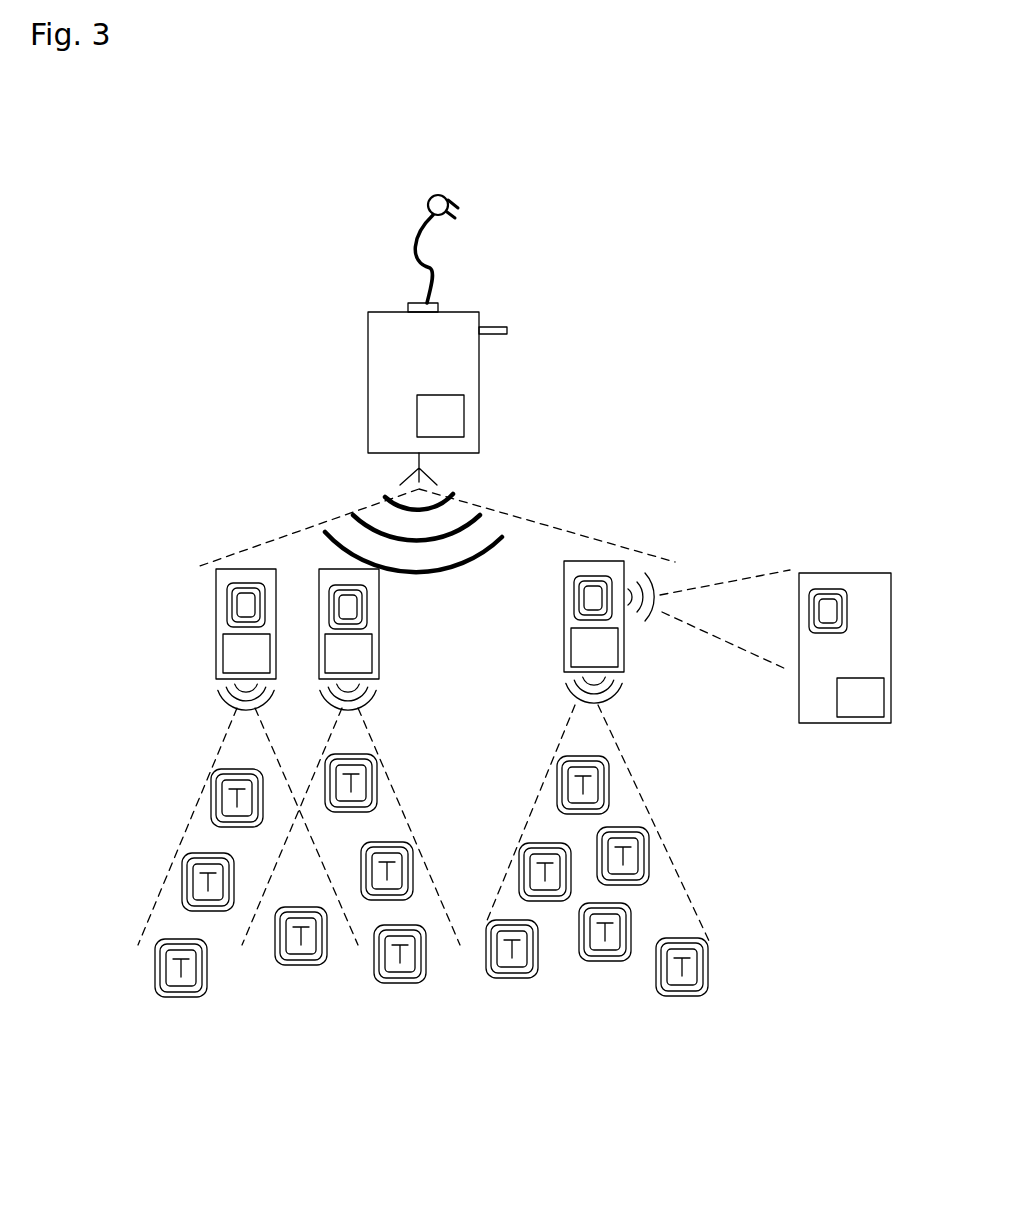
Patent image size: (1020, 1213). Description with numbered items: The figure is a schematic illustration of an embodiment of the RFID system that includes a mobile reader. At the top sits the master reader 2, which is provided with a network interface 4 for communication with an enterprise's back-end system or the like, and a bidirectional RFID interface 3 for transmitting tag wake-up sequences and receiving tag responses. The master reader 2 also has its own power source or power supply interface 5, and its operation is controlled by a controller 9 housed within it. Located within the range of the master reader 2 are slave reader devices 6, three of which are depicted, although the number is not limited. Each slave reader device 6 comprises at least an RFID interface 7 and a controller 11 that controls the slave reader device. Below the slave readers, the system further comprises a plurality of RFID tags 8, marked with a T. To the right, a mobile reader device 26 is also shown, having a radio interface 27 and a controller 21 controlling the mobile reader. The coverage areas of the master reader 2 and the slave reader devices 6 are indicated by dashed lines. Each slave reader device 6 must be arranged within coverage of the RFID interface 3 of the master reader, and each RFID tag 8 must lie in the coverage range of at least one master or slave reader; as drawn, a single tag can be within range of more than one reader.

The master reader 2 is at (380, 334).
The RFID interface 3 is at (398, 470).
The network interface 4 is at (500, 313).
The power supply interface 5 is at (415, 197).
The slave reader device 6 is at (392, 608).
The RFID interface 7 is at (245, 605).
The RFID tag 8 is at (279, 1000).
The controller 9 is at (432, 429).
The controller 11 is at (235, 667).
The controller 21 is at (848, 711).
The mobile reader device 26 is at (845, 663).
The radio interface 27 is at (828, 608).